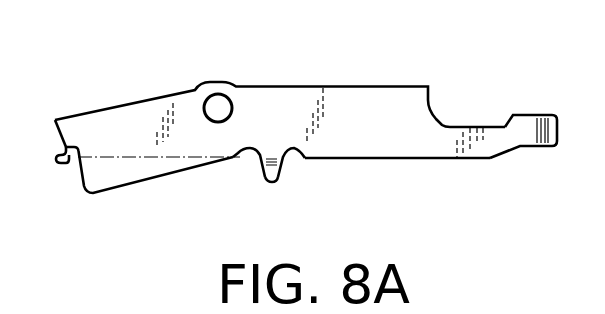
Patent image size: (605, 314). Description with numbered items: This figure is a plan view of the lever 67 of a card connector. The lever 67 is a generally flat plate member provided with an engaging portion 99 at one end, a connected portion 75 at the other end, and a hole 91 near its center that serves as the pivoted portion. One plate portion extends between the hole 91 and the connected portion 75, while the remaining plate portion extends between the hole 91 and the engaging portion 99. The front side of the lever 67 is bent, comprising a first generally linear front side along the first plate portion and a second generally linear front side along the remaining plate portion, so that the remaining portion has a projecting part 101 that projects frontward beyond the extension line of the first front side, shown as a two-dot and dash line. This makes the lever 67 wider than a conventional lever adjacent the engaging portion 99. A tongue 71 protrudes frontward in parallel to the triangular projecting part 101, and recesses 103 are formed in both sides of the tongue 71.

The lever 67 is at (392, 85).
The hole 91 is at (234, 101).
The connected portion 75 is at (546, 113).
The engaging portion 99 is at (68, 165).
The projecting part 101 is at (160, 183).
The recesses 103 is at (248, 153).
The tongue 71 is at (276, 183).